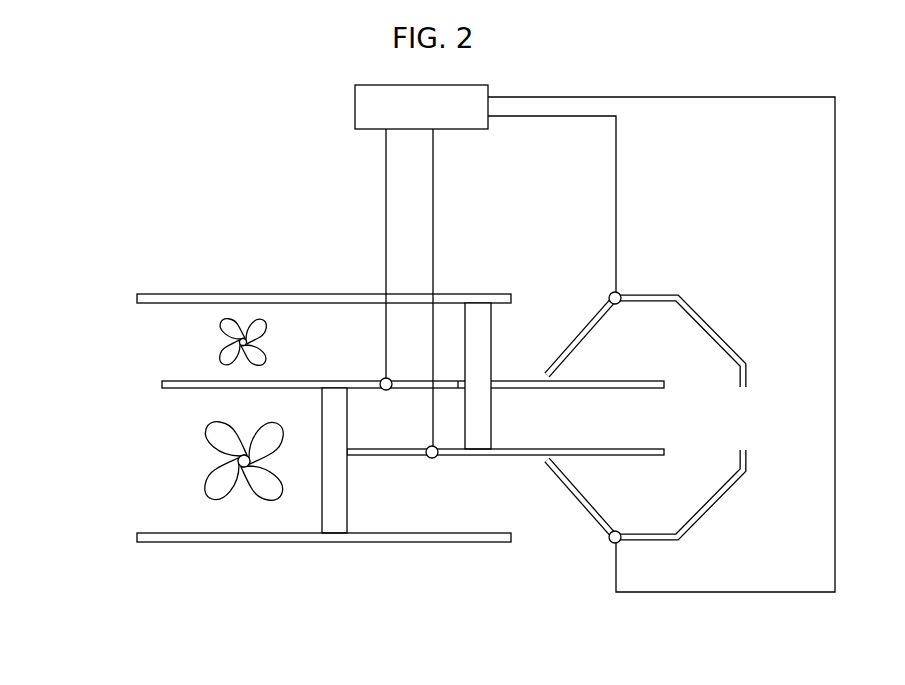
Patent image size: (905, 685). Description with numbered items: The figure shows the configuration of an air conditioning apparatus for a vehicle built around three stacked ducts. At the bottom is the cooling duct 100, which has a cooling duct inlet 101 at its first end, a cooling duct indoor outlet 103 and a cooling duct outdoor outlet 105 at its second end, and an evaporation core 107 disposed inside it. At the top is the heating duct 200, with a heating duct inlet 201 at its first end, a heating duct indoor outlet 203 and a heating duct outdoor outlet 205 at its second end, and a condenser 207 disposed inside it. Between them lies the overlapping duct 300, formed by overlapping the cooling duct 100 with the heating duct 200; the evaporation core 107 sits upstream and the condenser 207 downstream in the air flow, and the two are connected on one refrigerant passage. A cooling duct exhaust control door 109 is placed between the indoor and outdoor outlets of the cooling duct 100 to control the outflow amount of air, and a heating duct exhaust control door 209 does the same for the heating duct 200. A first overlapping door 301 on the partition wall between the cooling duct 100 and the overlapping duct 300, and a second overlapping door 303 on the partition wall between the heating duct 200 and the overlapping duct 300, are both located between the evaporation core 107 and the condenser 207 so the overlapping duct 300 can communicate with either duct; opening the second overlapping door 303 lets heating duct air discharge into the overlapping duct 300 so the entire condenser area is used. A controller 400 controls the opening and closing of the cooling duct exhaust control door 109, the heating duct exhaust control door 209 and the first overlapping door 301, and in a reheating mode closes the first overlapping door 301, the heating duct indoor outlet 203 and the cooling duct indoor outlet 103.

The cooling duct 100 is at (224, 556).
The cooling duct inlet 101 is at (182, 464).
The cooling duct indoor outlet 103 is at (683, 490).
The cooling duct outdoor outlet 105 is at (547, 518).
The evaporation core 107 is at (332, 520).
The cooling duct exhaust control door 109 is at (578, 505).
The heating duct 200 is at (250, 290).
The heating duct inlet 201 is at (184, 326).
The heating duct indoor outlet 203 is at (677, 336).
The heating duct outdoor outlet 205 is at (568, 302).
The condenser 207 is at (480, 320).
The heating duct exhaust control door 209 is at (592, 337).
The overlapping duct 300 is at (622, 412).
The first overlapping door 301 is at (398, 456).
The second overlapping door 303 is at (443, 388).
The controller 400 is at (355, 108).